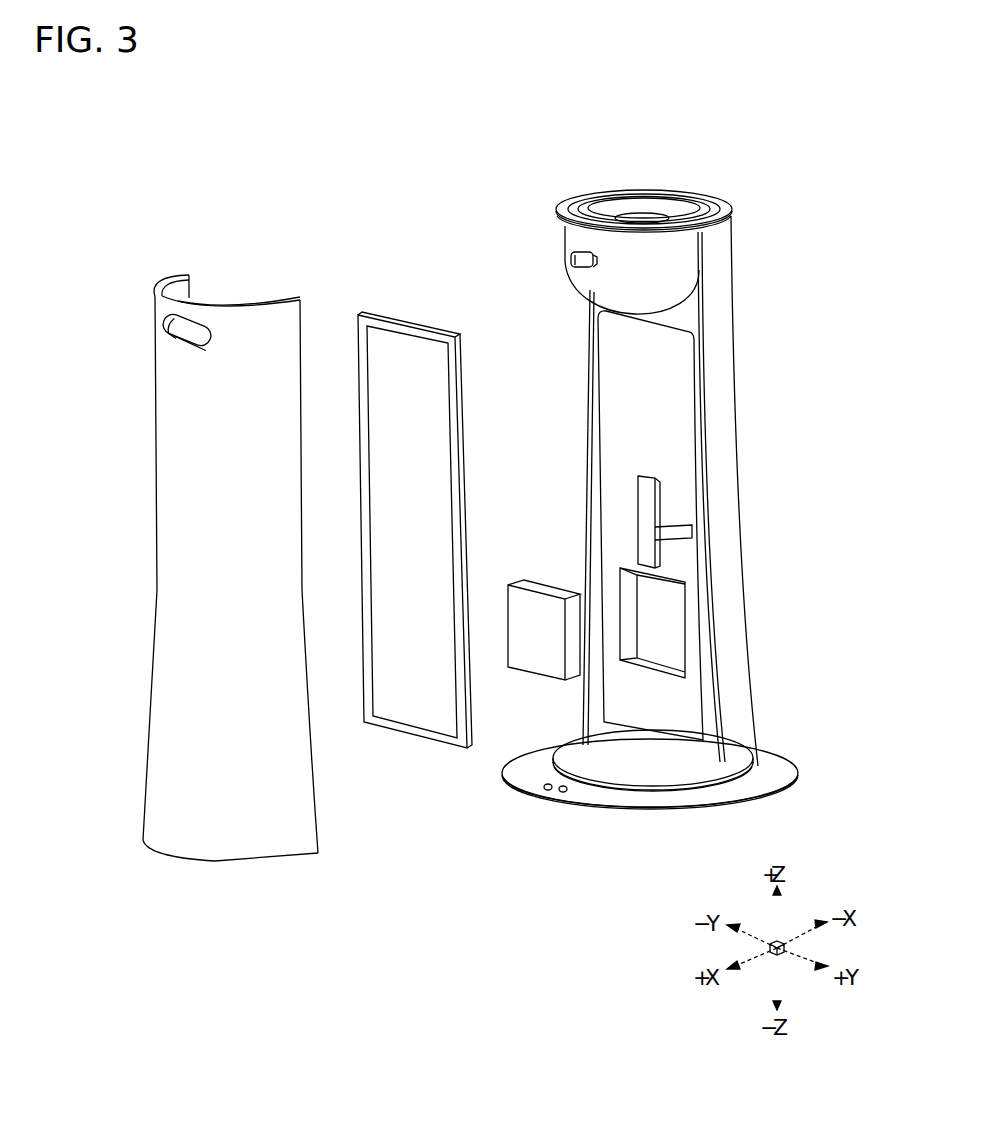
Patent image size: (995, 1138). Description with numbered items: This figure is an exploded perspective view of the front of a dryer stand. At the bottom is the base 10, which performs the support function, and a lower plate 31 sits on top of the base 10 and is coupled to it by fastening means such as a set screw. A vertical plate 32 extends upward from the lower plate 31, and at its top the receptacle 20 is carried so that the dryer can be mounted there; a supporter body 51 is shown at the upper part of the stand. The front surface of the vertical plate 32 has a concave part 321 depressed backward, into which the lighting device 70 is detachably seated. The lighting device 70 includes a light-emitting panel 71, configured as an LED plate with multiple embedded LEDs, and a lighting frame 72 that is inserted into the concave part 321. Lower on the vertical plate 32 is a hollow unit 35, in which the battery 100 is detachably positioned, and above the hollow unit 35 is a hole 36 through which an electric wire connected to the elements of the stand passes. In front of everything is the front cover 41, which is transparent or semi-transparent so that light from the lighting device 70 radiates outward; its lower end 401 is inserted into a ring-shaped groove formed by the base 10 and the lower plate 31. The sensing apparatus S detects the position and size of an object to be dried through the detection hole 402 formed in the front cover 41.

The base 10 is at (650, 801).
The receptacle 20 is at (656, 211).
The lower plate 31 is at (671, 764).
The vertical plate 32 is at (703, 491).
The concave part 321 is at (672, 372).
The hollow unit 35 is at (652, 620).
The hole 36 is at (662, 503).
The front cover 41 is at (193, 608).
The lower end 401 is at (217, 861).
The detection hole 402 is at (182, 336).
The supporter body 51 is at (607, 228).
The lighting device 70 is at (391, 539).
The light-emitting panel 71 is at (390, 511).
The lighting frame 72 is at (386, 316).
The battery 100 is at (540, 655).
The sensing apparatus S is at (571, 259).